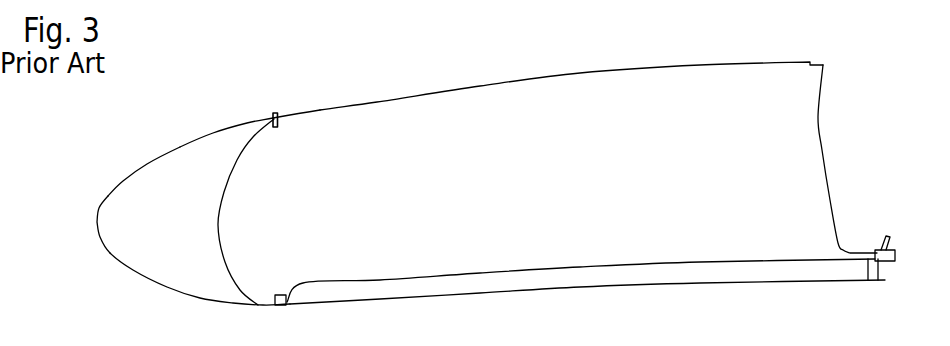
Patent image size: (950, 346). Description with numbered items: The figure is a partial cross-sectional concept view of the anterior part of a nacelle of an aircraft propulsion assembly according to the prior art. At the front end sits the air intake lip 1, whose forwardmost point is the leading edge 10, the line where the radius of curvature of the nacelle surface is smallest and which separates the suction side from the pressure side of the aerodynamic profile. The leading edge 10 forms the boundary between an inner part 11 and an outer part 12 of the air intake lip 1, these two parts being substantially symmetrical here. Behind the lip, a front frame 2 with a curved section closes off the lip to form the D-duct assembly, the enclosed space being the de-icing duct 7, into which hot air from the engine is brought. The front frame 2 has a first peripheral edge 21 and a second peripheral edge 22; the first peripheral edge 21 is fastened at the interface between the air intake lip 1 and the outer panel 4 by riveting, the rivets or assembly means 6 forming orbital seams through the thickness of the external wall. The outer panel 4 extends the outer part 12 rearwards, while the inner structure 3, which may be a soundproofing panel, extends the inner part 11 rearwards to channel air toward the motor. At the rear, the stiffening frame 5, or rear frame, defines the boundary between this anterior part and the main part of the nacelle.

The air intake lip 1 is at (107, 252).
The front frame 2 is at (223, 217).
The inner structure 3 is at (560, 278).
The outer panel 4 is at (377, 100).
The stiffening frame 5 is at (827, 163).
The assembly means 6 is at (273, 115).
The de-icing duct 7 is at (150, 198).
The leading edge 10 is at (97, 222).
The inner part 11 is at (213, 302).
The outer part 12 is at (207, 140).
The first peripheral edge 21 is at (281, 124).
The second peripheral edge 22 is at (266, 297).